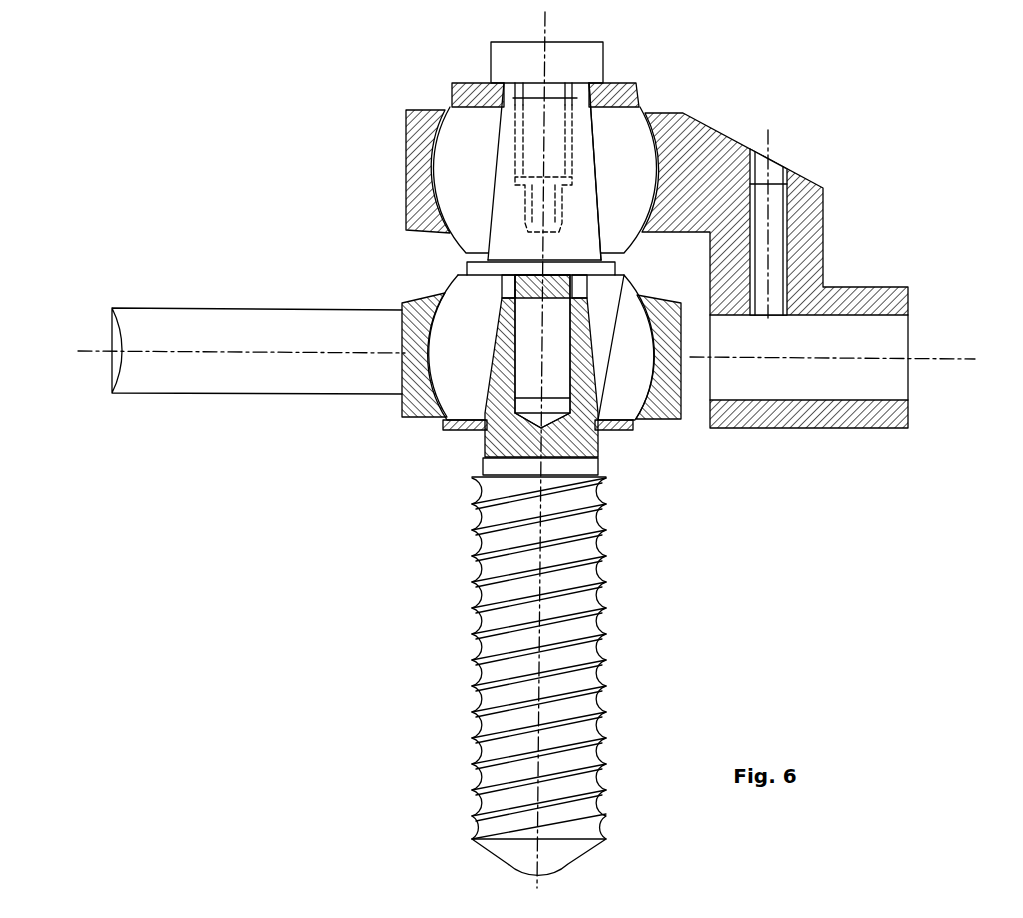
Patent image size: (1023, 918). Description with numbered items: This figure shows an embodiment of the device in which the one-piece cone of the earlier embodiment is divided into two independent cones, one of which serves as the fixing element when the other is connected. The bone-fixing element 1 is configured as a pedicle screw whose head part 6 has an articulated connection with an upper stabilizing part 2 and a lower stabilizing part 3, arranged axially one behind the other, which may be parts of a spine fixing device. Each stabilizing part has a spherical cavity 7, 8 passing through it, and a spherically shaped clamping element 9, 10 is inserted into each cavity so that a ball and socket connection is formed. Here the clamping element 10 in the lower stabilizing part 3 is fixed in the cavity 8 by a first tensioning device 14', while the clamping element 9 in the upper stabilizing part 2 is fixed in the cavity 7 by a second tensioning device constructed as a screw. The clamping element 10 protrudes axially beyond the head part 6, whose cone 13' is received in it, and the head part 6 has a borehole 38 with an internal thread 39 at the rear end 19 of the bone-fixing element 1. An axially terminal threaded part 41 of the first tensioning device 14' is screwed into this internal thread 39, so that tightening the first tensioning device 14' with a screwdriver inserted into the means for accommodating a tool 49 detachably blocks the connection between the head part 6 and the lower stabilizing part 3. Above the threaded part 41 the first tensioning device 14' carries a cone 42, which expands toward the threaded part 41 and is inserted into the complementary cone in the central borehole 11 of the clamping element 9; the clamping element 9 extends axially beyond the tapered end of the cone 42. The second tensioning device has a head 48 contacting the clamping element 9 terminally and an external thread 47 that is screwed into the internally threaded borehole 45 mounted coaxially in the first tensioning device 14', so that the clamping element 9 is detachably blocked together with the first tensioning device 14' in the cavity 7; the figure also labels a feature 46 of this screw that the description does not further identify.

The bone-fixing element 1 is at (627, 566).
The upper stabilizing part 2 is at (807, 208).
The lower stabilizing part 3 is at (192, 375).
The head part 6 is at (480, 460).
The spherical cavity 7 is at (463, 175).
The spherical cavity 8 is at (427, 370).
The clamping element 9 is at (527, 202).
The clamping element 10 is at (462, 368).
The central borehole 11 is at (513, 90).
The lower ball socket 13' is at (677, 389).
The first tensioning device 14' is at (446, 258).
The rear end 19 is at (500, 315).
The borehole 38 is at (548, 403).
The internal thread 39 is at (625, 433).
The threaded part 41 is at (533, 353).
The cone 42 is at (515, 245).
The borehole having an internal thread 45 is at (530, 212).
The ring nut 46 is at (530, 178).
The external thread 47 is at (557, 155).
The head 48 is at (587, 65).
The means for accommodating a tool 49 is at (530, 204).